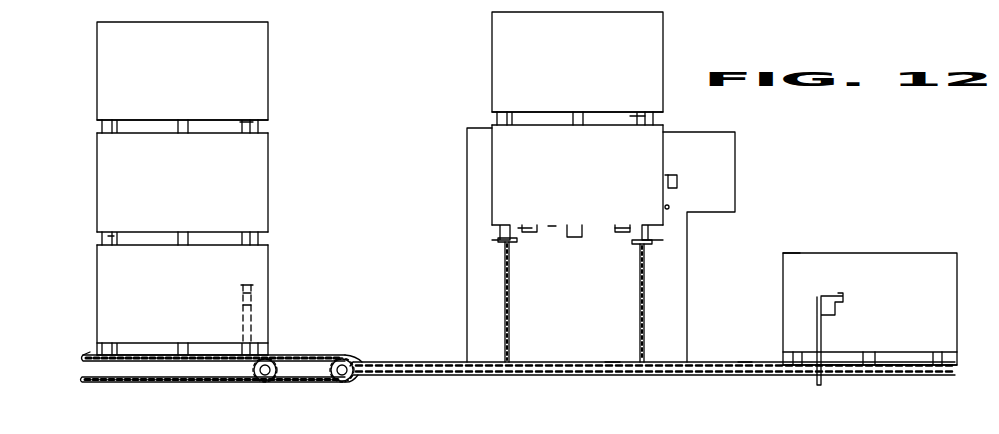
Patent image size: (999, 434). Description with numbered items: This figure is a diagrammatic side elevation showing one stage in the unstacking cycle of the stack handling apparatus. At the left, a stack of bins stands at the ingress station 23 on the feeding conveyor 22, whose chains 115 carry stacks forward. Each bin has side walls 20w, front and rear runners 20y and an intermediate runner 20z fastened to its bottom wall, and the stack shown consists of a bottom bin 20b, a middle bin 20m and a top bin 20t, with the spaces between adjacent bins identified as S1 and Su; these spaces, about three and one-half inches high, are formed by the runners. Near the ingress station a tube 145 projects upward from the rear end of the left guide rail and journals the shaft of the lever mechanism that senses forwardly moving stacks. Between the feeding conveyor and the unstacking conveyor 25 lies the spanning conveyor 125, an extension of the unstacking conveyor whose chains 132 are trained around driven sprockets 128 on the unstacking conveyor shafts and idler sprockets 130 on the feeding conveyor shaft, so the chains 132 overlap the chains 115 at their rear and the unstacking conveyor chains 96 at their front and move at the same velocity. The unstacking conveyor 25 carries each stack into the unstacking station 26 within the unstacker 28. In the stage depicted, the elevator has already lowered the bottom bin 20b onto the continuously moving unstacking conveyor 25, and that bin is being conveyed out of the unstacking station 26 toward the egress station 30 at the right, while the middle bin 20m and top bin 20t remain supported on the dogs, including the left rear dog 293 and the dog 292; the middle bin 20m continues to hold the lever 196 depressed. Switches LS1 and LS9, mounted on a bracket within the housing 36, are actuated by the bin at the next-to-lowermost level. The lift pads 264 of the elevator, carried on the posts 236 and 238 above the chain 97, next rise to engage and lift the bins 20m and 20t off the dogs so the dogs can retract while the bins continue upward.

The top bin 20t is at (115, 92).
The middle bin 20m is at (115, 187).
The bottom bin 20b is at (108, 292).
The side walls 20w is at (262, 116).
The front and rear runners 20y is at (260, 132).
The intermediate runner 20z is at (185, 112).
The upper space Su is at (240, 122).
The lower space S1 is at (108, 240).
The ingress station 23 is at (282, 265).
The tube 145 is at (268, 281).
The feeding conveyor 22 is at (84, 355).
The chains of the feeding conveyor 115 is at (82, 379).
The idler sprockets 130 is at (253, 371).
The driven sprockets 128 is at (342, 362).
The chains 132 is at (344, 381).
The spanning conveyor 125 is at (316, 361).
The unstacking conveyor 25 is at (423, 355).
The unstacking station 26 is at (426, 303).
The unstacker 28 is at (463, 139).
The control housing 36 is at (731, 139).
The switch LS9 is at (696, 177).
The switch LS1 is at (668, 175).
The lever 196 is at (669, 207).
The left rear dog 293 is at (525, 220).
The dog 292 is at (625, 220).
The lift pads 264 is at (520, 241).
The support post 238 is at (511, 325).
The support post 236 is at (640, 300).
The unstacking conveyor chains 96 is at (612, 362).
The conveyor chain 97 is at (745, 362).
The egress station 30 is at (804, 246).